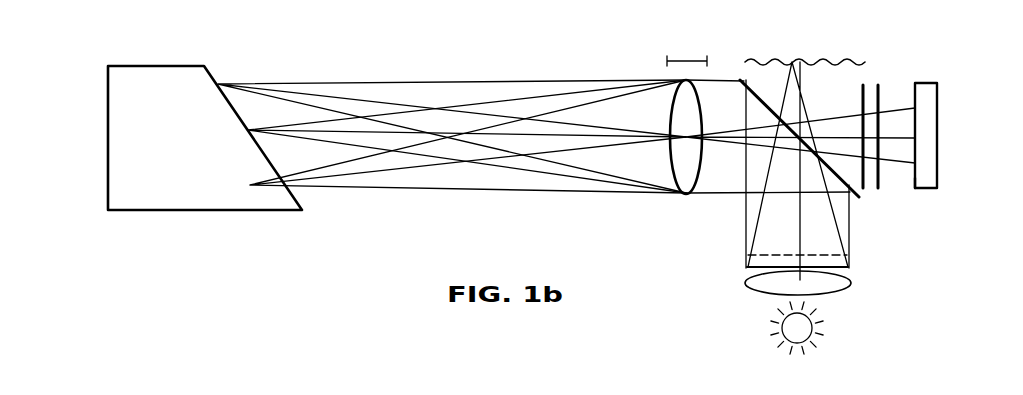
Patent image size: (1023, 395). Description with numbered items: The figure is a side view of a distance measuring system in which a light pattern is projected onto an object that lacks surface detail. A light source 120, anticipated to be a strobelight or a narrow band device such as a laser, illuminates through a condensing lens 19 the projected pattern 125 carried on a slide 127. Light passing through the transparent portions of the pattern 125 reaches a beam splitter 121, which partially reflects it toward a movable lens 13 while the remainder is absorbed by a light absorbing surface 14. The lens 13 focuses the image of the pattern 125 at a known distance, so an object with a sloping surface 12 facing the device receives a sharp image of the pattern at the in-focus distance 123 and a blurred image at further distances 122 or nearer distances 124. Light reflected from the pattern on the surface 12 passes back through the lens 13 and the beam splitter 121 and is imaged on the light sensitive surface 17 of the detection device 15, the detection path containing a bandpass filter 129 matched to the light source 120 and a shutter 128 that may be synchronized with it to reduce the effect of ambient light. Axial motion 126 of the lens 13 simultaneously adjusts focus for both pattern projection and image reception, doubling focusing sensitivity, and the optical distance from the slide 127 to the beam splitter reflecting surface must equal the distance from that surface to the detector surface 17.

The sloping surface 12 is at (263, 160).
The further distance 122 is at (218, 84).
The in-focus distance 123 is at (258, 121).
The nearer distance 124 is at (285, 188).
The movable lens 13 is at (670, 156).
The axial motion 126 is at (686, 58).
The light absorbing surface 14 is at (768, 64).
The beam splitter 121 is at (859, 196).
The bandpass filter 129 is at (861, 86).
The shutter 128 is at (880, 90).
The detection device 15 is at (929, 83).
The light sensitive surface 17 is at (915, 190).
The projected pattern 125 is at (749, 255).
The slide 127 is at (747, 267).
The condensing lens 19 is at (838, 292).
The light source 120 is at (812, 340).